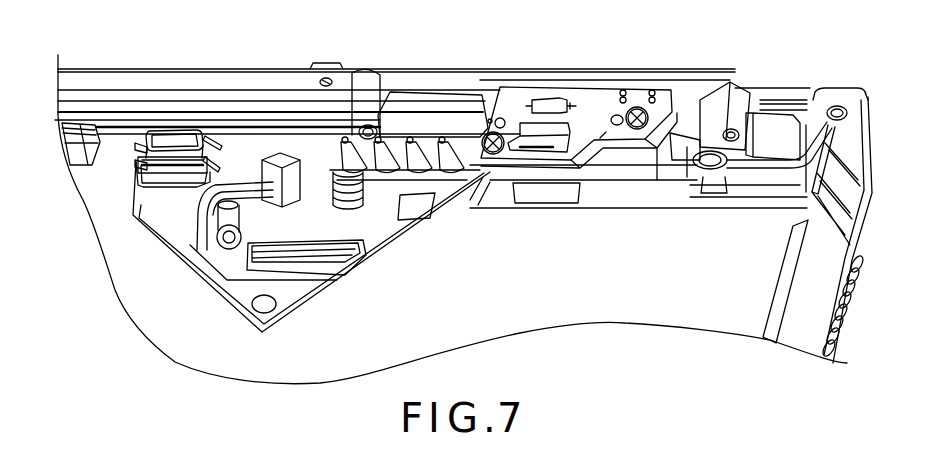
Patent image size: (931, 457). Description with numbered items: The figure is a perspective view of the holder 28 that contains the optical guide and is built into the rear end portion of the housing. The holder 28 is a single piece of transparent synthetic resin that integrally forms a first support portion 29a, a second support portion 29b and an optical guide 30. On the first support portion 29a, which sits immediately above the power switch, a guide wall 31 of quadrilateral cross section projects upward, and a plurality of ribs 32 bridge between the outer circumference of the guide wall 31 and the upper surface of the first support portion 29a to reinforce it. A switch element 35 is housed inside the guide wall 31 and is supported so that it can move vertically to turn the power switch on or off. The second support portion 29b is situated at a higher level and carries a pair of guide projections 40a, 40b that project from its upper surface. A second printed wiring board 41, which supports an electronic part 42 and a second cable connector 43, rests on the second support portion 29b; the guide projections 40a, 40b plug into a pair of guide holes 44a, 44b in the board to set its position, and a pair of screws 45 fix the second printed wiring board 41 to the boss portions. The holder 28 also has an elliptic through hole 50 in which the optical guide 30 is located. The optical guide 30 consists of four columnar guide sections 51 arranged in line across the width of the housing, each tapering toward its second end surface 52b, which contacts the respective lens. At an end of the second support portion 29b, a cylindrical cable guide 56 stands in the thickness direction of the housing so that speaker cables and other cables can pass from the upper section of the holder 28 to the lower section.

The holder 28 is at (152, 248).
The first support portion 29a is at (183, 203).
The second support portion 29b is at (633, 150).
The optical guide 30 is at (423, 183).
The guide wall 31 is at (140, 195).
The ribs 32 is at (232, 128).
The switch element 35 is at (170, 147).
The guide projection 40a is at (490, 121).
The guide projection 40b is at (622, 118).
The second printed wiring board 41 is at (600, 93).
The electronic part 42 is at (547, 100).
The second cable connector 43 is at (557, 138).
The guide hole 44a is at (500, 118).
The guide hole 44b is at (604, 135).
The screws 45 is at (670, 112).
The through hole 50 is at (340, 270).
The guide sections 51 is at (392, 183).
The second end surface 52b is at (443, 137).
The cable guide 56 is at (713, 165).